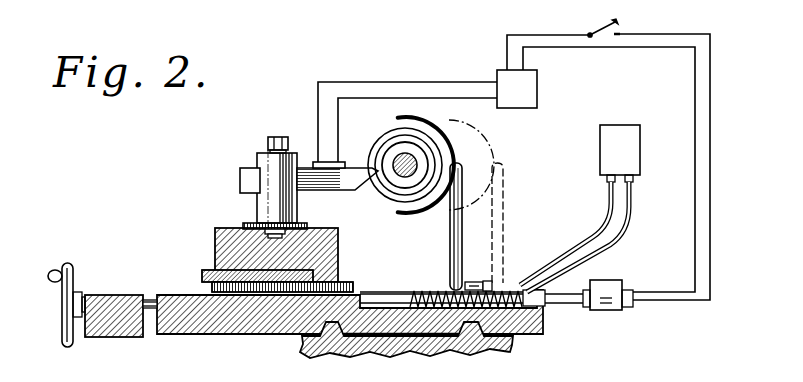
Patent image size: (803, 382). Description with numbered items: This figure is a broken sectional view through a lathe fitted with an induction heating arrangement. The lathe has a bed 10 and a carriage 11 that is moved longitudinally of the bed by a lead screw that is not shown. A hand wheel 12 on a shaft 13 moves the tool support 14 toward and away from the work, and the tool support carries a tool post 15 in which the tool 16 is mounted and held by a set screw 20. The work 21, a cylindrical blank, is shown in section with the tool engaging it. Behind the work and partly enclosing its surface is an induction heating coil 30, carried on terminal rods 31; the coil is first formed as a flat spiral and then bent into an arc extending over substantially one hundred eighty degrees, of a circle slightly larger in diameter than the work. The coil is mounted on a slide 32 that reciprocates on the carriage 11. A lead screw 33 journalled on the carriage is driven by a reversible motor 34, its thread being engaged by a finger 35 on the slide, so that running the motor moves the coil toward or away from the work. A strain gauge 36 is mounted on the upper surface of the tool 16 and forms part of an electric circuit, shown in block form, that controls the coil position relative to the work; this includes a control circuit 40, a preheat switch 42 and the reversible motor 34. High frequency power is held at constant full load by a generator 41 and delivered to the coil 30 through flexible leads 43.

The bed 10 is at (497, 353).
The carriage 11 is at (277, 335).
The hand wheel 12 is at (73, 278).
The shaft 13 is at (155, 295).
The tool support 14 is at (339, 241).
The tool post 15 is at (289, 206).
The tool 16 is at (329, 190).
The set screw 20 is at (270, 138).
The work 21 is at (375, 150).
The induction heating coil 30 is at (414, 121).
The terminal rods 31 is at (450, 252).
The slide 32 is at (477, 282).
The lead screw 33 is at (382, 295).
The reversible motor 34 is at (616, 280).
The finger 35 is at (494, 282).
The strain gauge 36 is at (322, 162).
The control circuit 40 is at (525, 100).
The generator 41 is at (636, 161).
The preheat switch 42 is at (600, 28).
The flexible leads 43 is at (573, 254).